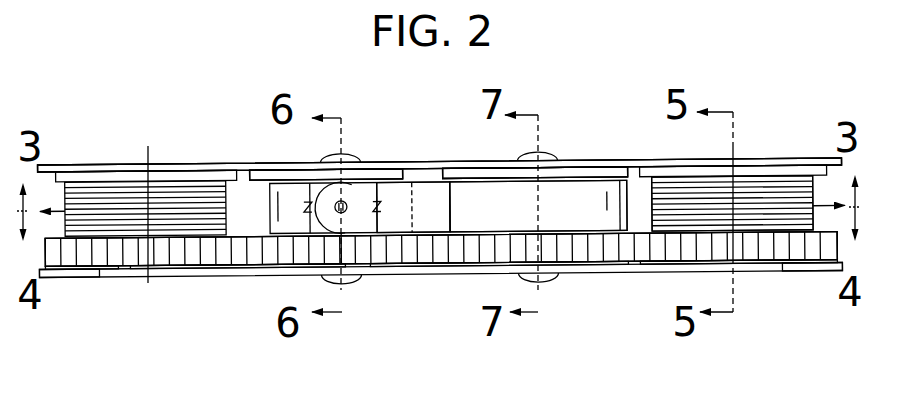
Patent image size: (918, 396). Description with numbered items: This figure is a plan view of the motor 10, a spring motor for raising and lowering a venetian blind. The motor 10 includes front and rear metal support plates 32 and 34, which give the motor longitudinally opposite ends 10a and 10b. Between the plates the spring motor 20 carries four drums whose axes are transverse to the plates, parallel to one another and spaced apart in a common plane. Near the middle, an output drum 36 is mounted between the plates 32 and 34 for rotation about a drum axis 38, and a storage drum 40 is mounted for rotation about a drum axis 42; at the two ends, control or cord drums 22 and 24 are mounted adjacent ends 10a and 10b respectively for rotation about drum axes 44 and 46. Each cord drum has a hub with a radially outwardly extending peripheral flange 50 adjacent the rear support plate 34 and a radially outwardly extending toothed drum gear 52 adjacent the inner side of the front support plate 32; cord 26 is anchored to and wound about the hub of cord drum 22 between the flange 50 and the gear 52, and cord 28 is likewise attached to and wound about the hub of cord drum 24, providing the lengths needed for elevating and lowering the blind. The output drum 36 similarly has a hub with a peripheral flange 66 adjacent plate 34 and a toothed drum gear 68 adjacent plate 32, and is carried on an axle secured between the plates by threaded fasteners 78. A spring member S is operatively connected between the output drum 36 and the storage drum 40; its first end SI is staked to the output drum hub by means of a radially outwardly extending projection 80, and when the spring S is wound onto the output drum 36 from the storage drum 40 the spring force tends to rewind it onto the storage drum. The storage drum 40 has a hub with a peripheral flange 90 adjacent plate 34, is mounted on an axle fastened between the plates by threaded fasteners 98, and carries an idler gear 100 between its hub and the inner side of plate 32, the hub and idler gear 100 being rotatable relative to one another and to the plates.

The motor 10 is at (208, 112).
The longitudinally opposite end 10a is at (833, 274).
The longitudinally opposite end 10b is at (48, 275).
The spring motor 20 is at (420, 145).
The cord drum 22 is at (788, 166).
The cord drum 24 is at (90, 166).
The cord 26 is at (830, 209).
The cord 28 is at (60, 212).
The front metal support plate 32 is at (615, 270).
The rear metal support plate 34 is at (610, 163).
The output drum 36 is at (386, 170).
The drum axis 38 is at (342, 247).
The storage drum 40 is at (574, 173).
The drum axis 42 is at (536, 202).
The drum axis 44 is at (732, 151).
The drum axis 46 is at (122, 176).
The peripheral flange 50 is at (192, 176).
The drum gear 52 is at (200, 256).
The peripheral flange 66 is at (259, 168).
The drum gear 68 is at (402, 258).
The threaded fastener 78 is at (347, 153).
The projection 80 is at (344, 200).
The peripheral flange 90 is at (461, 172).
The threaded fastener 98 is at (548, 153).
The idler gear 100 is at (572, 253).
The spring member S is at (427, 230).
The first end of spring SI is at (322, 198).